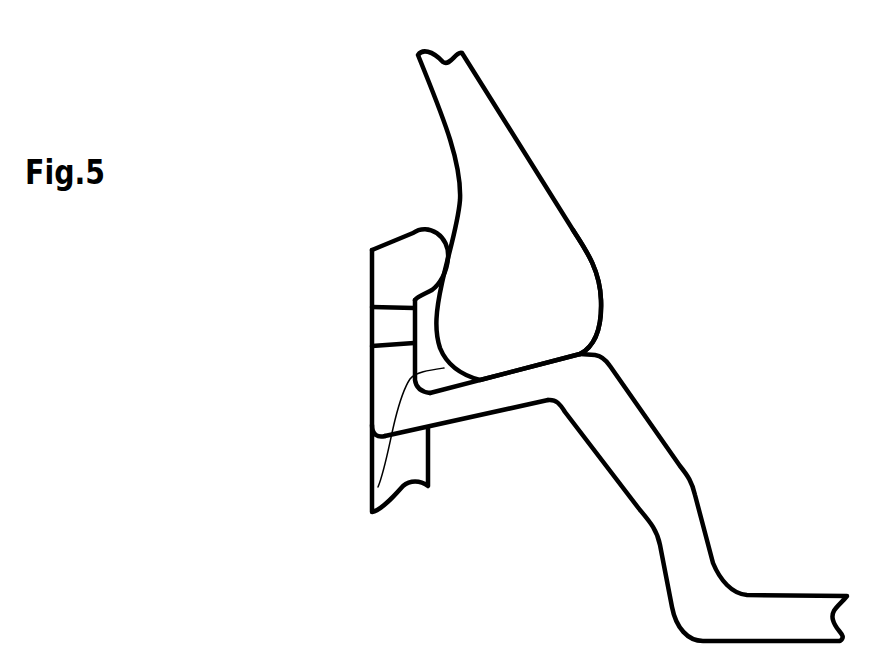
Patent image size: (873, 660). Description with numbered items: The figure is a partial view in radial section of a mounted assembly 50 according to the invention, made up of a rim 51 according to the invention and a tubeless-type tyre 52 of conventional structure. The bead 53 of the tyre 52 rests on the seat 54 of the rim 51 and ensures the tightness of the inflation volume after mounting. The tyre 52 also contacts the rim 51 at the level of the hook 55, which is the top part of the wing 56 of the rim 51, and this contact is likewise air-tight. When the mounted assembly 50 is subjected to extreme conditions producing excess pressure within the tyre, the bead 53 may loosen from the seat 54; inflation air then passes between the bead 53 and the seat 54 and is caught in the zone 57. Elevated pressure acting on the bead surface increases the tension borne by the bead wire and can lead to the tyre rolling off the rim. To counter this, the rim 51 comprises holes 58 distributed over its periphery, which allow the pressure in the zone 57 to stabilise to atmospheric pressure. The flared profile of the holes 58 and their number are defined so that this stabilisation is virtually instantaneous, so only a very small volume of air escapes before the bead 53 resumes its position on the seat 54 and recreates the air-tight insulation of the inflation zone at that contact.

The mounted assembly 50 is at (708, 240).
The rim 51 is at (580, 527).
The tyre 52 is at (380, 99).
The bead 53 is at (525, 312).
The seat 54 is at (497, 376).
The hook 55 is at (415, 267).
The wing 56 is at (393, 373).
The zone 57 is at (374, 479).
The holes 58 is at (393, 332).